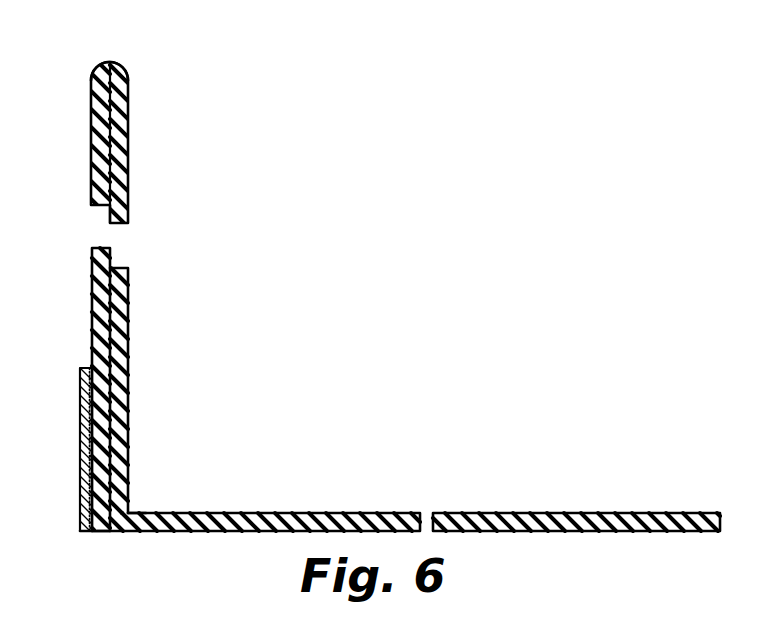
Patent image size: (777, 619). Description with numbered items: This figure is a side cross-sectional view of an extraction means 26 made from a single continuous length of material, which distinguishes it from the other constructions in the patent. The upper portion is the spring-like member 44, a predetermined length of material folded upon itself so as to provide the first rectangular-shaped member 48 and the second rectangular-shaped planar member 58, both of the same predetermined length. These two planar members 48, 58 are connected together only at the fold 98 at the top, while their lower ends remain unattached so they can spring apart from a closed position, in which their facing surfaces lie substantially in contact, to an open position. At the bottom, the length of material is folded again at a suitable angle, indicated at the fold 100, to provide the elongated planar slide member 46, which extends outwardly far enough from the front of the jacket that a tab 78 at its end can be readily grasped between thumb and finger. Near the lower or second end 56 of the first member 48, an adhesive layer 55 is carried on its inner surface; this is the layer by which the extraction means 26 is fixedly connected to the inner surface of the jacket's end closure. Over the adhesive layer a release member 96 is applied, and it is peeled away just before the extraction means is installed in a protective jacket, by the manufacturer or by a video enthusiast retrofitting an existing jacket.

The extraction means 26 is at (125, 124).
The fold 98 is at (112, 58).
The spring-like member 44 is at (92, 196).
The first rectangular-shaped member 48 is at (93, 318).
The second rectangular-shaped planar member 58 is at (129, 296).
The release member 96 is at (80, 395).
The slide member 46 is at (421, 500).
The tab 78 is at (681, 513).
The fold 100 is at (136, 505).
The adhesive layer 55 is at (92, 537).
The second end 56 is at (100, 532).